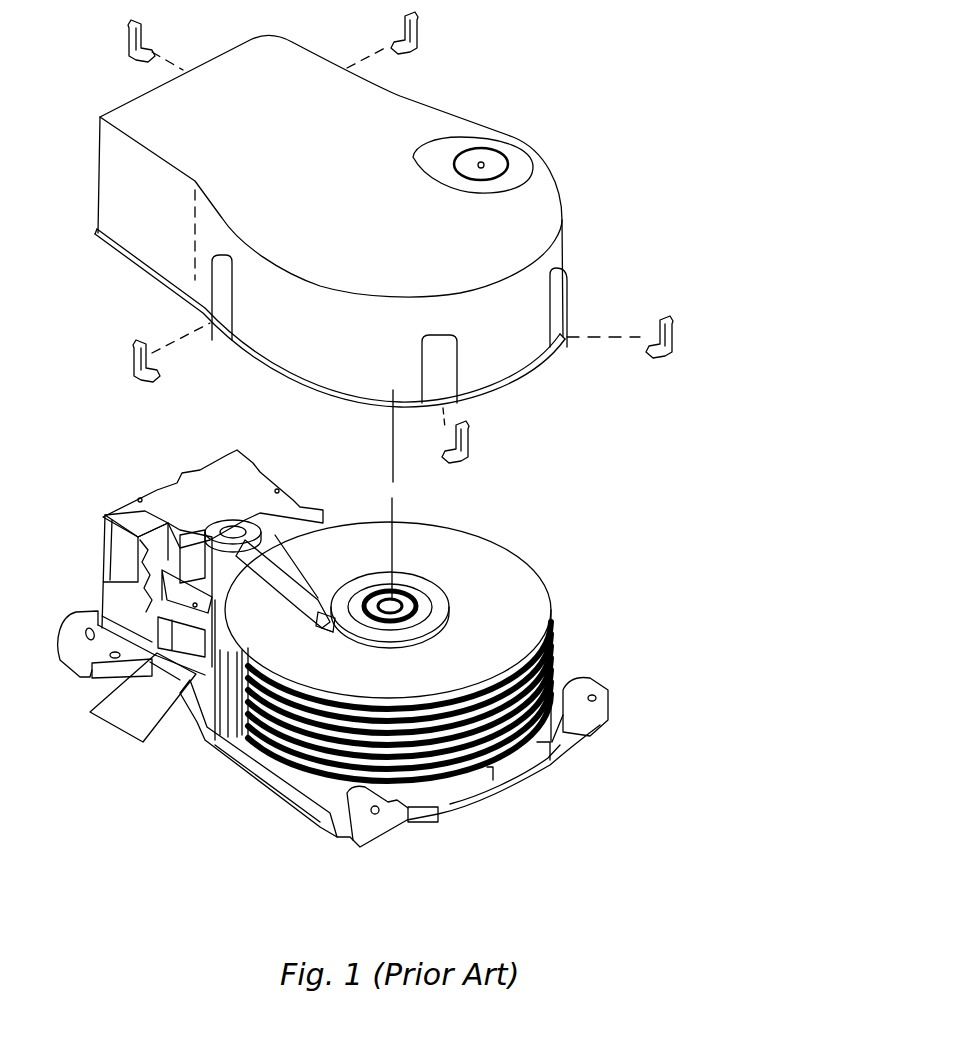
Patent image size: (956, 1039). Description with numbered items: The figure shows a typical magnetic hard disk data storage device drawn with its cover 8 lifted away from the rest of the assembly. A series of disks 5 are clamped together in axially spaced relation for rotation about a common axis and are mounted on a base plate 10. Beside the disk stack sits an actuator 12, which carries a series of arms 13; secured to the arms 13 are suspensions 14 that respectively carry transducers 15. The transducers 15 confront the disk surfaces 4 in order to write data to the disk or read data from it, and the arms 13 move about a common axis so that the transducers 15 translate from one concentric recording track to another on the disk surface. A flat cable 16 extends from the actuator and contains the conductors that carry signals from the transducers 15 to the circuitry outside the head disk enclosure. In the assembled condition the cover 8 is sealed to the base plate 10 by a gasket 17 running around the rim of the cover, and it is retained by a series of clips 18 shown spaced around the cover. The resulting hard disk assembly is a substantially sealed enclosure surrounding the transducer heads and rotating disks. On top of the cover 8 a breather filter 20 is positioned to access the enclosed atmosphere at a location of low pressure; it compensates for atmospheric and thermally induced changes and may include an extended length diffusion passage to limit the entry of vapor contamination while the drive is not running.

The disk surfaces 4 is at (488, 565).
The disks 5 is at (551, 613).
The cover 8 is at (555, 165).
The base plate 10 is at (390, 830).
The actuator 12 is at (203, 464).
The arms 13 is at (318, 555).
The suspensions 14 is at (333, 622).
The transducers 15 is at (333, 628).
The flat cable 16 is at (170, 705).
The gasket 17 is at (520, 380).
The clips 18 is at (128, 42).
The breather filter 20 is at (505, 148).